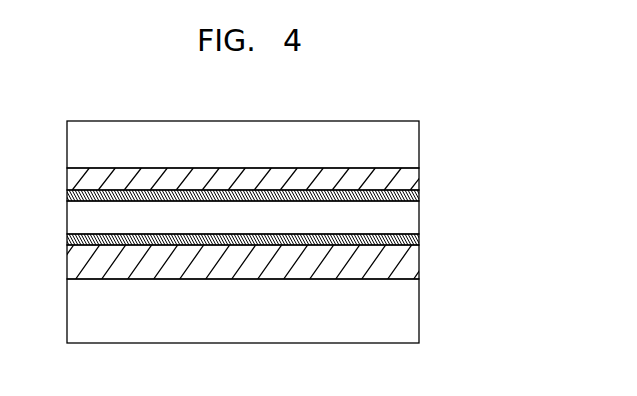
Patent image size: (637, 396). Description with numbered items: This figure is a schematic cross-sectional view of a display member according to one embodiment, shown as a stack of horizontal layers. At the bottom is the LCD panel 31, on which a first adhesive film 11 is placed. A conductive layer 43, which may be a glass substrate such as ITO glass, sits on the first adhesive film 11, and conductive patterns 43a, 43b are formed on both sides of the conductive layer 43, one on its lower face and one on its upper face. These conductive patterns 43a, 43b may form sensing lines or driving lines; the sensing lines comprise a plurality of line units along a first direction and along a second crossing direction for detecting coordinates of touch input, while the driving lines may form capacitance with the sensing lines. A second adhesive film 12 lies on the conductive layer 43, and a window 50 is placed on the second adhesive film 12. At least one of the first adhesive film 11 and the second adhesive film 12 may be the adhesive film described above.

The window 50 is at (410, 144).
The second adhesive film 12 is at (410, 173).
The conductive pattern 43b is at (410, 192).
The conductive layer 43 is at (410, 217).
The conductive pattern 43a is at (410, 237).
The first adhesive film 11 is at (410, 260).
The LCD panel 31 is at (410, 328).